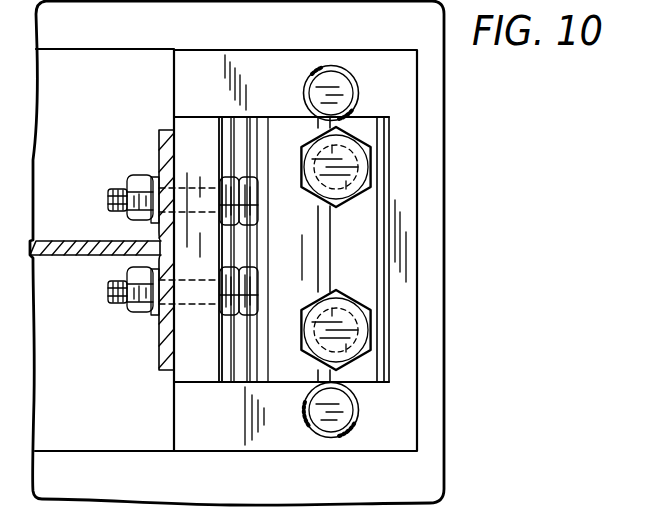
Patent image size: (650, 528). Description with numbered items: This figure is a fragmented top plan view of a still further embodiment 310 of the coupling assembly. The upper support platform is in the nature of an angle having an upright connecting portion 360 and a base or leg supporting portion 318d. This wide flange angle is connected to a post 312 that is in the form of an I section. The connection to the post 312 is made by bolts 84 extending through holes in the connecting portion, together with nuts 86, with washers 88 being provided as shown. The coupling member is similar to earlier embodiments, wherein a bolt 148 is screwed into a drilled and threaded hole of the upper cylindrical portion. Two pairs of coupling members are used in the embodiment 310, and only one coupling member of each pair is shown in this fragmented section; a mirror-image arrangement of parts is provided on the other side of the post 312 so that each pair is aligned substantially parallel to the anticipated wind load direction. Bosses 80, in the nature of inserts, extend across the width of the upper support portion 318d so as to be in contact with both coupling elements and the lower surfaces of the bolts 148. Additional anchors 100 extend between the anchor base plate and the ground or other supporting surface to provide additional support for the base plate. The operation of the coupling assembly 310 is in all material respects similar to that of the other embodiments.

The boss 80 is at (331, 267).
The bolt 84 is at (258, 268).
The nut 86 is at (188, 180).
The washer 88 is at (128, 178).
The additional anchor 100 is at (347, 90).
The bolt 148 is at (371, 155).
The coupling assembly embodiment 310 is at (488, 228).
The post 312 is at (53, 257).
The base or leg supporting portion 318d is at (373, 295).
The upright connecting portion 360 is at (200, 373).